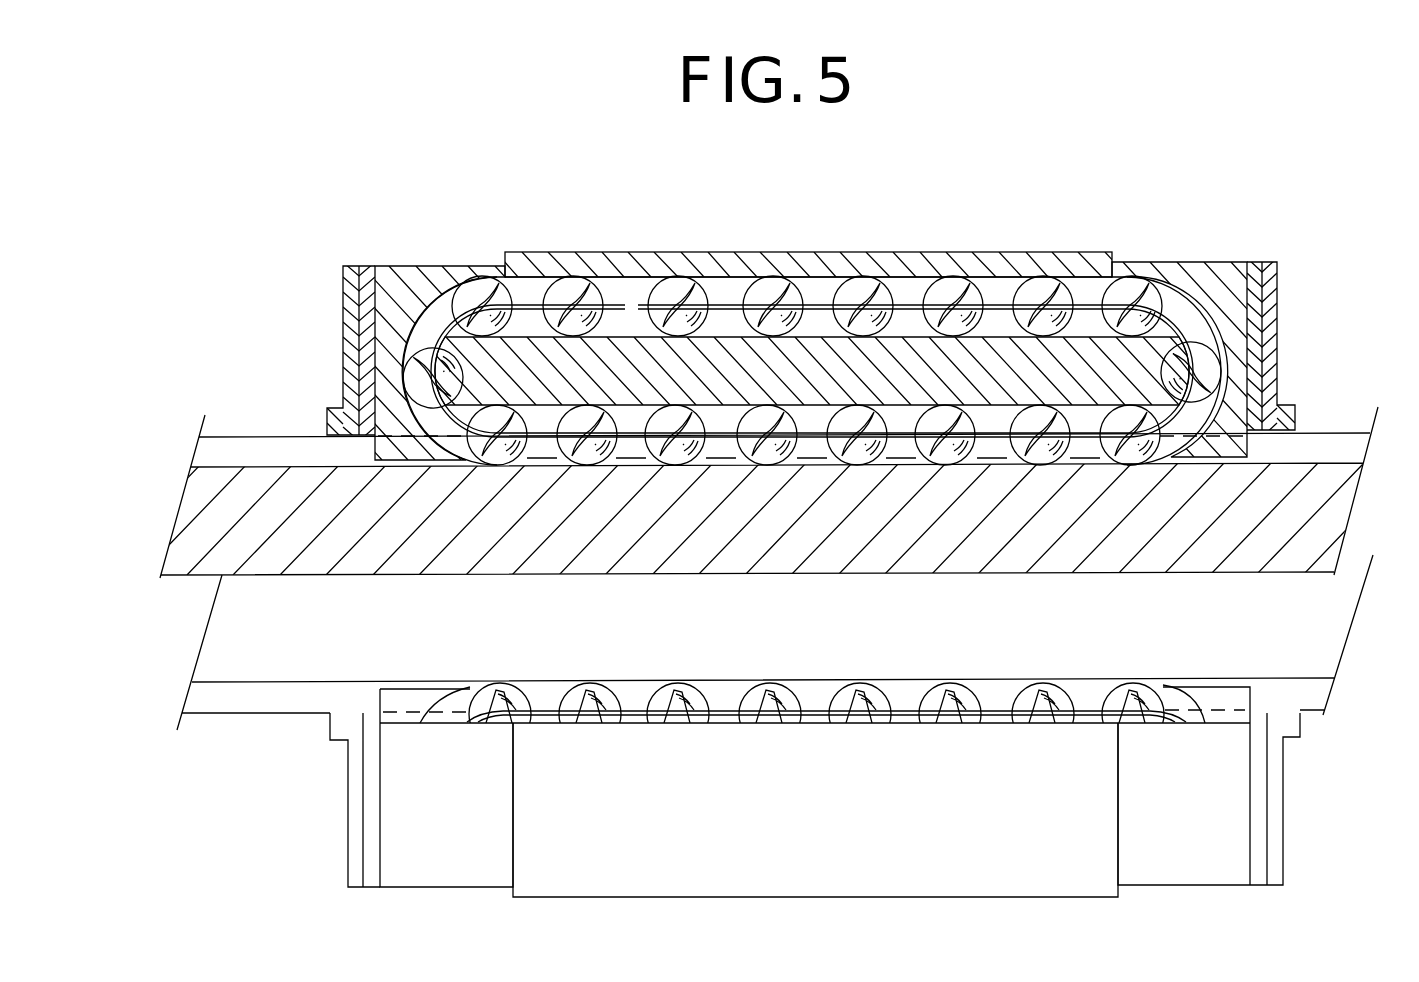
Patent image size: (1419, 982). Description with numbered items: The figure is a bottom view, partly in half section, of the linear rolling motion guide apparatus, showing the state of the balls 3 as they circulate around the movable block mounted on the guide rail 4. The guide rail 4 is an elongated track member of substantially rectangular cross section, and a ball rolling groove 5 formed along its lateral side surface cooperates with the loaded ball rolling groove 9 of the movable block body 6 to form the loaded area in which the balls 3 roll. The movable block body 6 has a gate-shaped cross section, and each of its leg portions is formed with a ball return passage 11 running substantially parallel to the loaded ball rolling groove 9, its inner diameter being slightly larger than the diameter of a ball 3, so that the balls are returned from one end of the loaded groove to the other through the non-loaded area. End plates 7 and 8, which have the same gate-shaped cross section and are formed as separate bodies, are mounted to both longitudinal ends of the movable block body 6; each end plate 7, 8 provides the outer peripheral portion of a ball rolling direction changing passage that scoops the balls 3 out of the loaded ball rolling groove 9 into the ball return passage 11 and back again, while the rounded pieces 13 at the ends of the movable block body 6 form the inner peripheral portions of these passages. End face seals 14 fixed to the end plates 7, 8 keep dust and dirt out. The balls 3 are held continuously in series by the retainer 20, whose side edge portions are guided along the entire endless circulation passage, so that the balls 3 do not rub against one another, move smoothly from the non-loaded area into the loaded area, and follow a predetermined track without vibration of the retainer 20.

The rolling members 3 is at (678, 285).
The guide rail 4 is at (297, 423).
The ball rolling grooves 5 is at (427, 268).
The movable block body 6 is at (1007, 257).
The end plate 7 is at (387, 277).
The end plate 8 is at (1193, 268).
The loaded ball rolling groove 9 is at (553, 413).
The ball return passage 11 is at (912, 288).
The rounded pieces 13 is at (484, 353).
The end face seals 14 is at (347, 317).
The retainer 20 is at (820, 303).